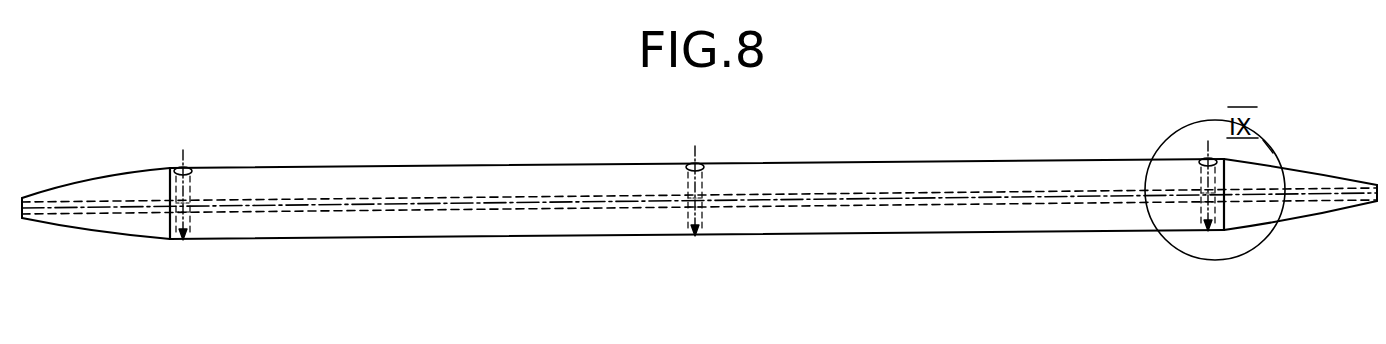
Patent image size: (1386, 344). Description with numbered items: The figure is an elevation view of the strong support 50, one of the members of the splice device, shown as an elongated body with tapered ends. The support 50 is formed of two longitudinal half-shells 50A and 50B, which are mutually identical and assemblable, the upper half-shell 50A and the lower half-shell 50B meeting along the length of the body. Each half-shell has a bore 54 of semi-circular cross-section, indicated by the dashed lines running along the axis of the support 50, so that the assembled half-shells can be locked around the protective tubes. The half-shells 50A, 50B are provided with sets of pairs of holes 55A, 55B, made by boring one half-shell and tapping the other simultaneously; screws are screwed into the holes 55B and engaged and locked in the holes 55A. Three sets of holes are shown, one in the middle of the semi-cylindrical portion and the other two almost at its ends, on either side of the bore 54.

The support 50 is at (892, 232).
The half-shell 50A is at (523, 178).
The half-shell 50B is at (529, 221).
The bore 54 is at (433, 195).
The holes 55A is at (183, 172).
The holes 55B is at (190, 219).